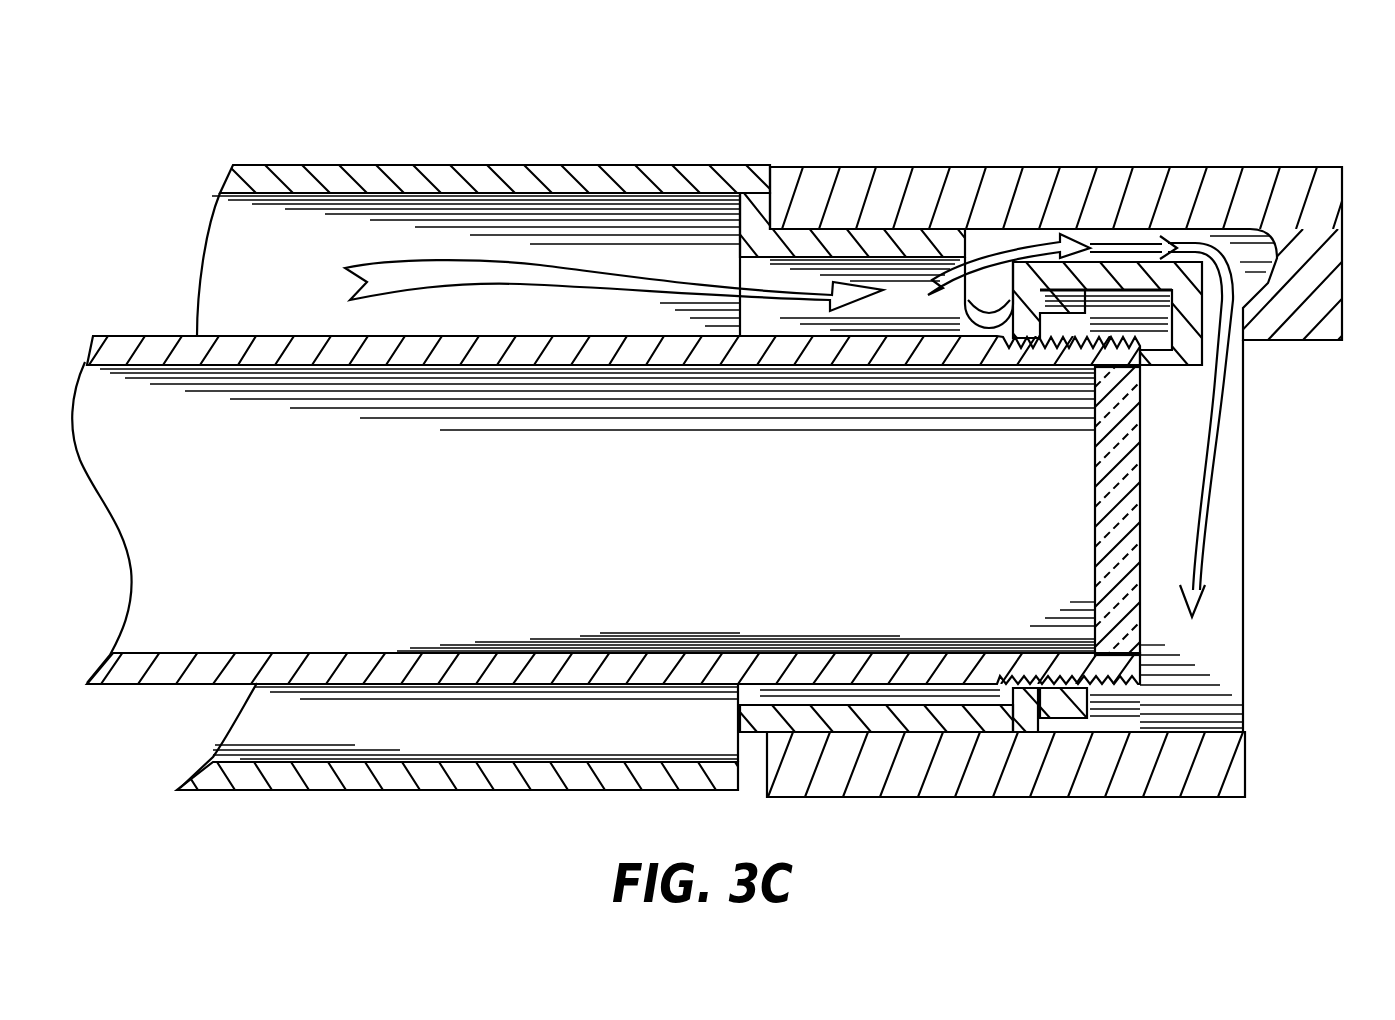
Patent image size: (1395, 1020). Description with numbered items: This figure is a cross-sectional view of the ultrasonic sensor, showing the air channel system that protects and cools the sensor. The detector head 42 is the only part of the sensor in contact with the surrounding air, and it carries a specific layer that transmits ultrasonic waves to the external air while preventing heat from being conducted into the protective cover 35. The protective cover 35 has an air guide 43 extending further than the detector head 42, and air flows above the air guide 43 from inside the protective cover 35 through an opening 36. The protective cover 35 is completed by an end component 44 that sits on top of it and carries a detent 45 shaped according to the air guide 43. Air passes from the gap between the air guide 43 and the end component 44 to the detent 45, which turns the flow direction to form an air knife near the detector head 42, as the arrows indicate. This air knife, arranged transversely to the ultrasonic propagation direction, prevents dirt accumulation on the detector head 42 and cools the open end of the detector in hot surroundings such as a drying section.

The protective cover 35 is at (325, 165).
The opening 36 is at (985, 315).
The detector head 42 is at (1140, 633).
The air guide 43 is at (1122, 372).
The end component 44 is at (1148, 167).
The detent 45 is at (1247, 312).